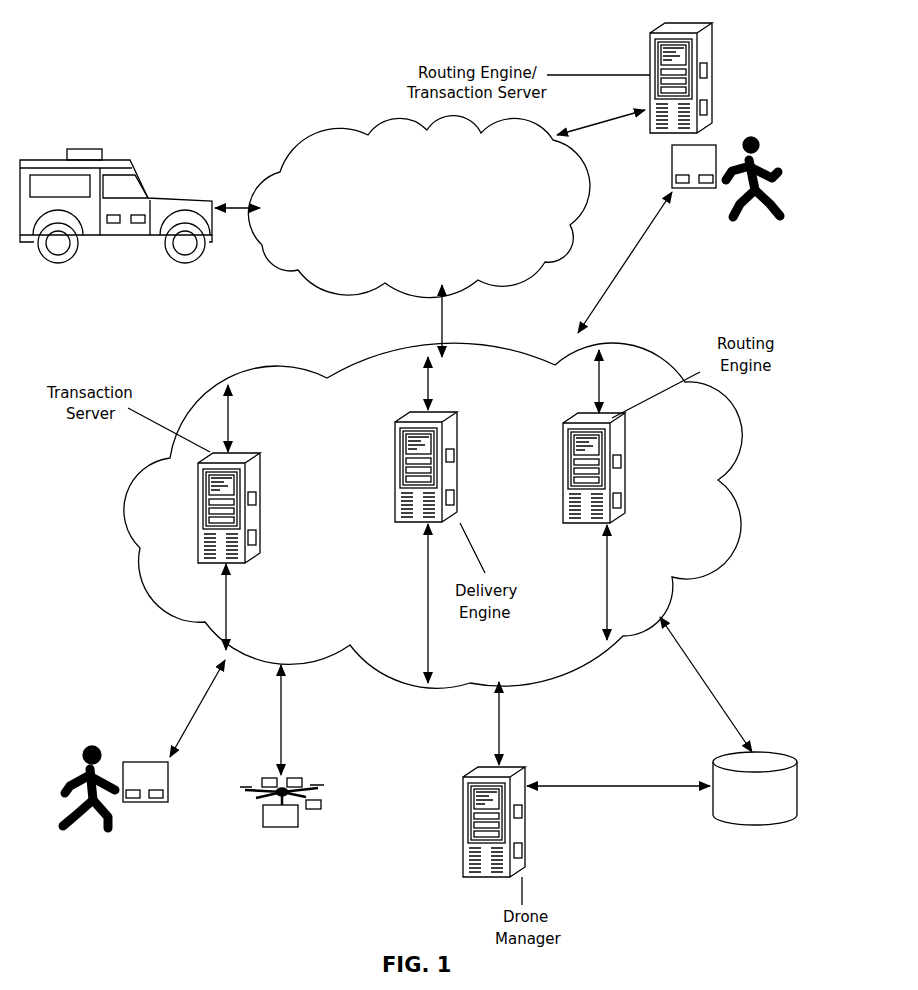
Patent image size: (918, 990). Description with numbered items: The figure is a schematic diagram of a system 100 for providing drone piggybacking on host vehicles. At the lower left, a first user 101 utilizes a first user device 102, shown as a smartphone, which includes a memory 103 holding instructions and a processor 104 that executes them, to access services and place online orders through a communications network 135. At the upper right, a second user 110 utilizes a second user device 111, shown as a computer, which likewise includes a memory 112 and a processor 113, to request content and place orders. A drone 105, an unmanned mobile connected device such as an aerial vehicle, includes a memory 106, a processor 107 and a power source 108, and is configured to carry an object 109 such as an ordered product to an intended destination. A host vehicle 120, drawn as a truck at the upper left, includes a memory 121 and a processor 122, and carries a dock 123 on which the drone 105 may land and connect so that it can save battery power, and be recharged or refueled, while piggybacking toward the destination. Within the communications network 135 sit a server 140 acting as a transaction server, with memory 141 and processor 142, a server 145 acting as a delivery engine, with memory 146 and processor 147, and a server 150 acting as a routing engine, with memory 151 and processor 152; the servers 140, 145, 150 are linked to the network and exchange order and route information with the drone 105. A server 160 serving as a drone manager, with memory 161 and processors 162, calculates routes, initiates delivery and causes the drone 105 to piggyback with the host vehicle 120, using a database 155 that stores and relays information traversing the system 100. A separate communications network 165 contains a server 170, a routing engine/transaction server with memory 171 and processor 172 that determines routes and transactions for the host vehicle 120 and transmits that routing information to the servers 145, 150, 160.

The system 100 is at (135, 78).
The first user 101 is at (62, 832).
The first user device 102 is at (168, 779).
The memory 103 is at (132, 802).
The processor 104 is at (156, 802).
The drone 105 is at (306, 786).
The memory 106 is at (267, 777).
The processor 107 is at (303, 777).
The power source 108 is at (322, 806).
The object 109 is at (281, 827).
The second user 110 is at (781, 222).
The second user device 111 is at (672, 168).
The memory 112 is at (683, 183).
The processor 113 is at (705, 183).
The host vehicle 120 is at (34, 158).
The memory 121 is at (113, 223).
The processor 122 is at (137, 223).
The dock 123 is at (85, 148).
The communications network 135 is at (115, 487).
The server 140 is at (198, 483).
The memory 141 is at (256, 498).
The processor 142 is at (256, 537).
The server 145 is at (395, 443).
The memory 146 is at (454, 460).
The processor 147 is at (454, 497).
The server 150 is at (563, 432).
The memory 151 is at (621, 463).
The processor 152 is at (621, 500).
The database 155 is at (755, 788).
The server 160 is at (463, 797).
The memory 161 is at (522, 851).
The processor 162 is at (522, 812).
The communications network 165 is at (337, 133).
The server 170 is at (650, 44).
The memory 171 is at (707, 70).
The processor 172 is at (707, 107).